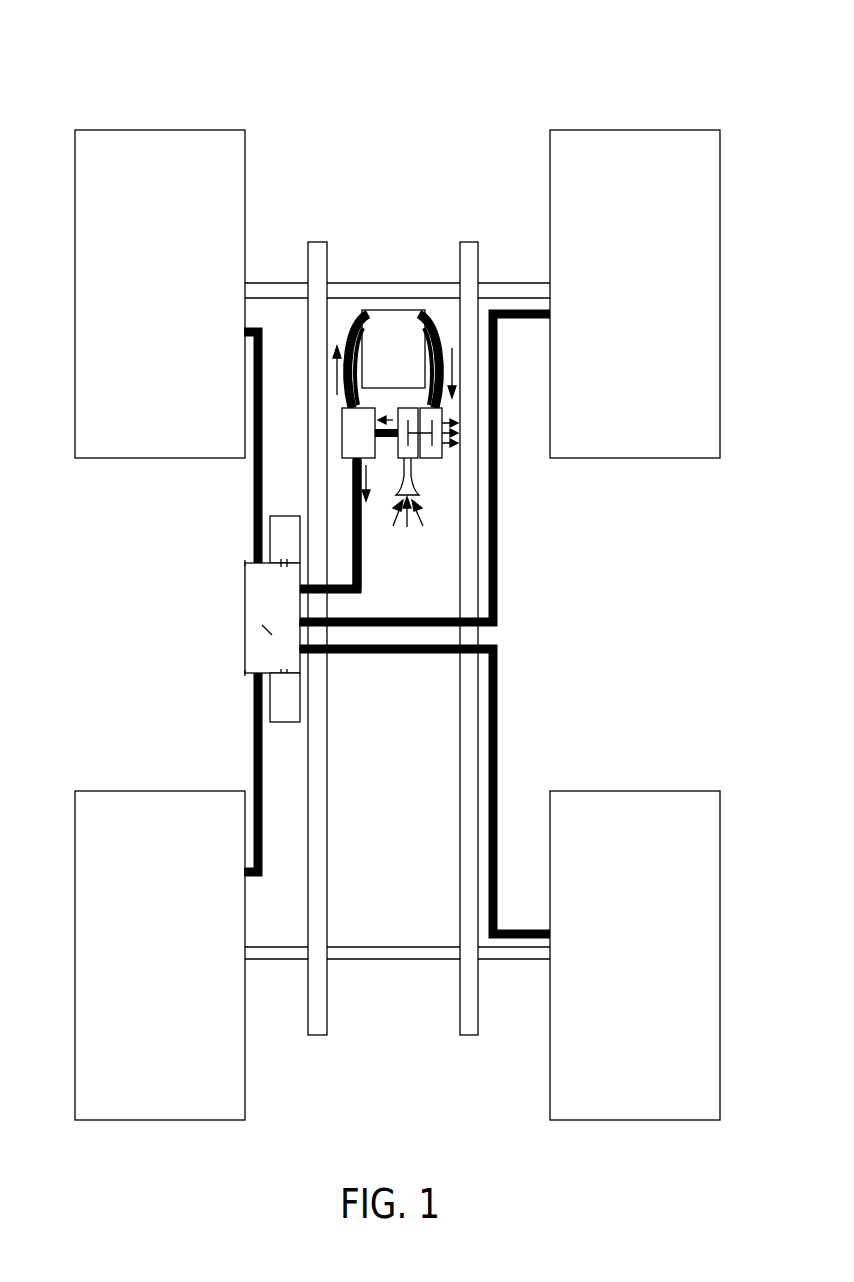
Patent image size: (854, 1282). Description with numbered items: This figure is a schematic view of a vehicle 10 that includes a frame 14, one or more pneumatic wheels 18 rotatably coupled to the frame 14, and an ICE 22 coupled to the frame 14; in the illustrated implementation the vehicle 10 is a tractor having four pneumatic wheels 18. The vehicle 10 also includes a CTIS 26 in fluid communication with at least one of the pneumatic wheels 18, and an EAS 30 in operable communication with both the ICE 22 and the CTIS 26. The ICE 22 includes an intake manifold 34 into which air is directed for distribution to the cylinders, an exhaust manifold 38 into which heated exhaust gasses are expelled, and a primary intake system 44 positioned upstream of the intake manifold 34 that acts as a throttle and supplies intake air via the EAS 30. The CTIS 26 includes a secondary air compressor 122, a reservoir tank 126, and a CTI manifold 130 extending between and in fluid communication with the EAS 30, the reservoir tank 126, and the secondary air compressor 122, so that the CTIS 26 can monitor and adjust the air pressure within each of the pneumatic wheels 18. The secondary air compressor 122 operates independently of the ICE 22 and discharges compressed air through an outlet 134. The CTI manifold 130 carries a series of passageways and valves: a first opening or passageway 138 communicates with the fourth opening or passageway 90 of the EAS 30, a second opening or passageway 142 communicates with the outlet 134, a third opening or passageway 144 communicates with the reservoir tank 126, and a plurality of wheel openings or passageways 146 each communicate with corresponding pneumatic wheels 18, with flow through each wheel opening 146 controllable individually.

The vehicle 10 is at (434, 82).
The frame 14 is at (318, 1036).
The pneumatic wheels 18 is at (176, 147).
The ICE 22 is at (393, 310).
The CTIS 26 is at (238, 629).
The EAS 30 is at (368, 458).
The intake manifold 34 is at (357, 316).
The exhaust manifold 38 is at (435, 318).
The primary intake system 44 is at (437, 472).
The fourth opening or passageway 90 is at (350, 464).
The secondary air compressor 122 is at (290, 522).
The reservoir tank 126 is at (283, 717).
The CTI manifold 130 is at (297, 590).
The outlet 134 is at (280, 566).
The first opening or passageway 138 is at (268, 633).
The second opening or passageway 142 is at (295, 564).
The third opening or passageway 144 is at (300, 673).
The wheel openings or passageways 146 is at (245, 563).